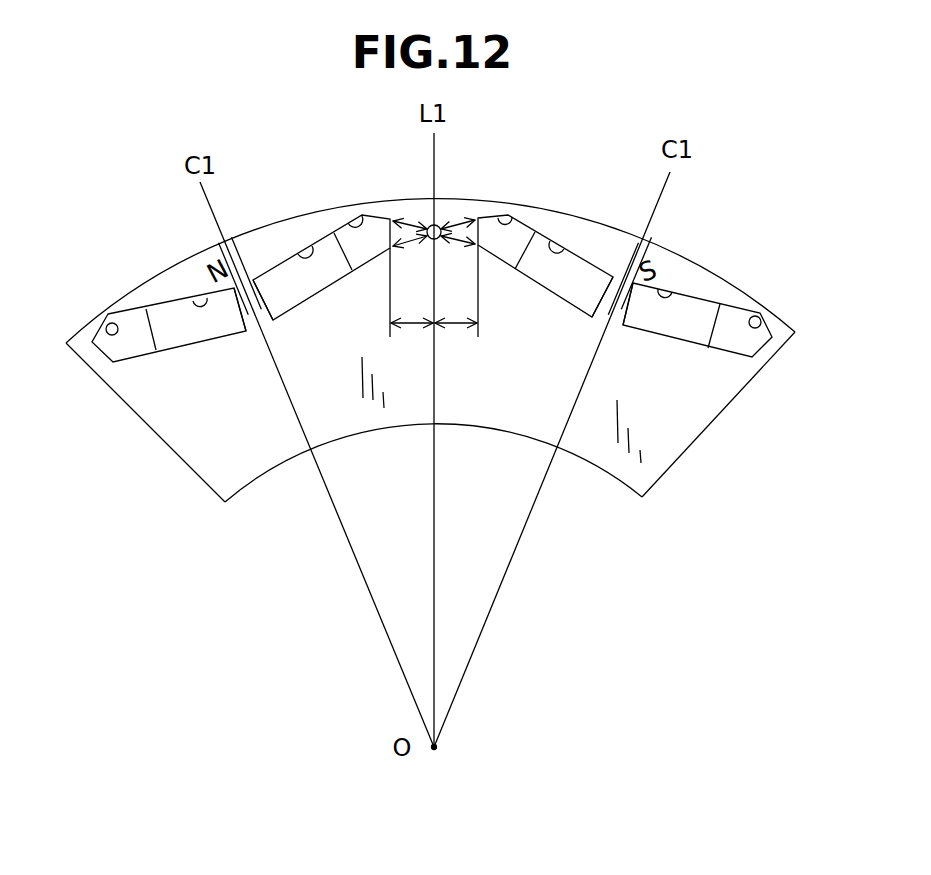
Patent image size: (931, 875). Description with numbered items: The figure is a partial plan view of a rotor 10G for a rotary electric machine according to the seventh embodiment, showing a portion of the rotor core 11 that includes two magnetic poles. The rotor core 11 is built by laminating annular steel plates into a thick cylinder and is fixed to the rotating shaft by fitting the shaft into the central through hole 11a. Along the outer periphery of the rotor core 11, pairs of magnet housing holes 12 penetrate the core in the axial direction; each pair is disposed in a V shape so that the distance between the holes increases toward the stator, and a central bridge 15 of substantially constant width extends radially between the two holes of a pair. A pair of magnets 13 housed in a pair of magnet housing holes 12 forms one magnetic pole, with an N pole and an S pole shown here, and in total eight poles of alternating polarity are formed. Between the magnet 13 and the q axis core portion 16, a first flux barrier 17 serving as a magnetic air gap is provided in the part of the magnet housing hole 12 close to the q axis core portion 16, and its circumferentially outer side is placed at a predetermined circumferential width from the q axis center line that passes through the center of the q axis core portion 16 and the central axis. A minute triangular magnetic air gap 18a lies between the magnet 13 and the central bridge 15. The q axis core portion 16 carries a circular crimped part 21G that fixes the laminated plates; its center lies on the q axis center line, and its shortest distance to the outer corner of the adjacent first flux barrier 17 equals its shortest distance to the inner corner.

The rotor 10G is at (144, 217).
The rotor core 11 is at (669, 468).
The through hole 11a is at (253, 487).
The magnet housing hole 12 is at (196, 296).
The magnet 13 is at (175, 318).
The central bridge 15 is at (236, 238).
The q axis core portion 16 is at (481, 236).
The first flux barrier 17 is at (108, 322).
The magnetic air gap 18a is at (250, 332).
The crimped part 21G is at (428, 224).